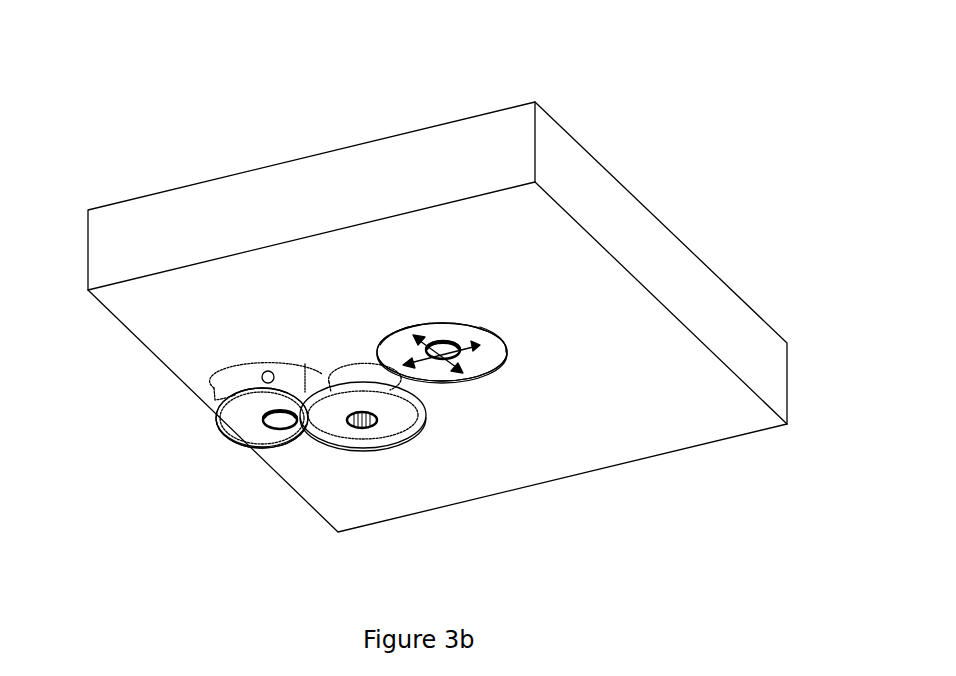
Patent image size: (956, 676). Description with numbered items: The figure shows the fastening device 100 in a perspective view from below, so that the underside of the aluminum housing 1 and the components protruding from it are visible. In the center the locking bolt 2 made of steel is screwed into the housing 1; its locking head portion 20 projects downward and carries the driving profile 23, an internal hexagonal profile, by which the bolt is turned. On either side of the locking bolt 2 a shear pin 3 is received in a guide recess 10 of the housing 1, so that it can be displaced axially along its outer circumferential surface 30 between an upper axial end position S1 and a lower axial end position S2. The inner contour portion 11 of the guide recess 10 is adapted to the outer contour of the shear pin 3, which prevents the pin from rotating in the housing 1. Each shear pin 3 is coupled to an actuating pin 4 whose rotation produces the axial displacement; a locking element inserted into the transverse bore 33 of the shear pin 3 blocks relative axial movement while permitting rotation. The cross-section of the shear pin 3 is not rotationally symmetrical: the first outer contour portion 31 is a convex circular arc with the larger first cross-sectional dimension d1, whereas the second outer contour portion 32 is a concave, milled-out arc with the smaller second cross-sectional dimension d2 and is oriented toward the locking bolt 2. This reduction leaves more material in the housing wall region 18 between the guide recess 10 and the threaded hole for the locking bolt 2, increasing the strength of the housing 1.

The fastening device 100 is at (198, 120).
The housing 1 is at (663, 440).
The guide recess 10 is at (522, 369).
The locking bolt 2 is at (355, 367).
The inner contour portion 11 is at (382, 363).
The housing wall region 18 is at (327, 370).
The locking head portion 20 is at (408, 347).
The driving profile 23 is at (361, 428).
The outer circumferential surface 30 is at (188, 422).
The first outer contour portion 31 is at (412, 327).
The second outer contour portion 32 is at (503, 343).
The transverse bore 33 is at (261, 377).
The shear pin 3 is at (243, 433).
The actuating pin 4 is at (280, 425).
The first cross-sectional dimension d1 is at (427, 325).
The second cross-sectional dimension d2 is at (468, 330).
The upper axial end position S1 is at (582, 512).
The lower axial end position S2 is at (187, 478).